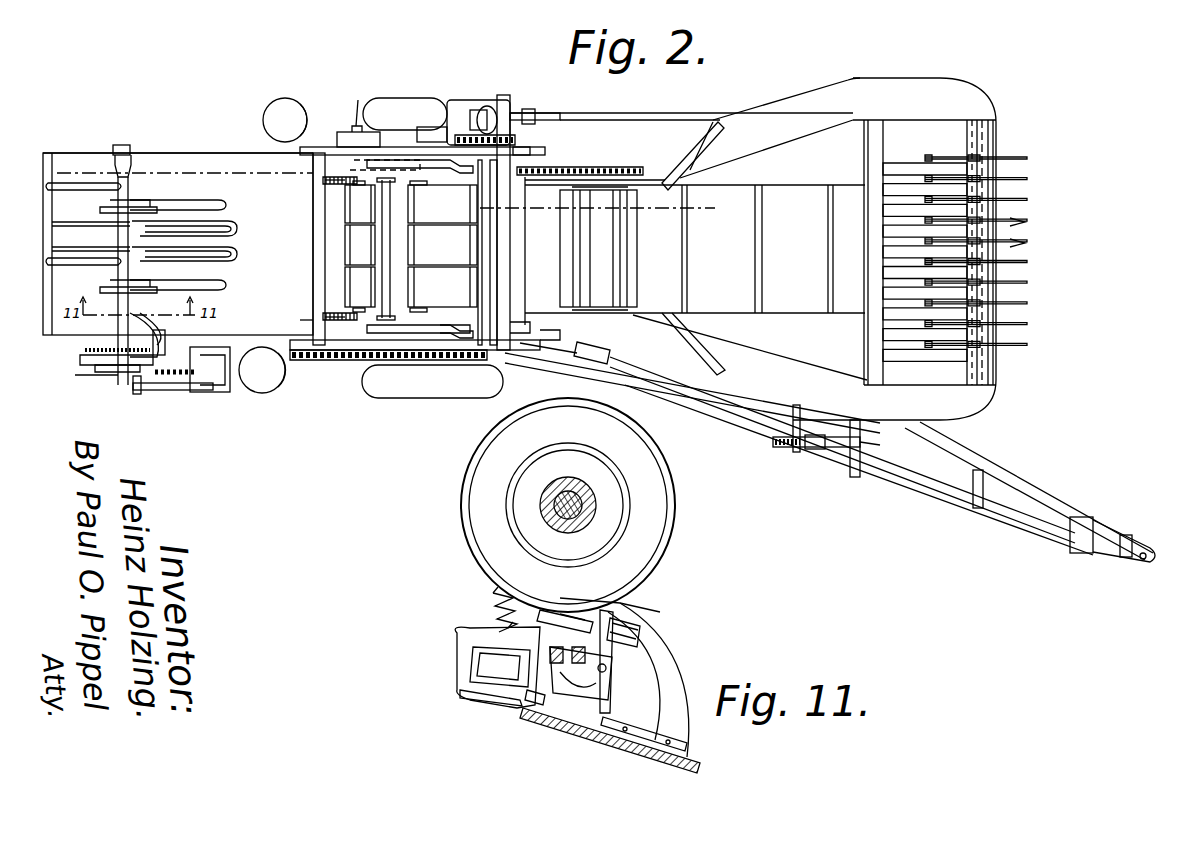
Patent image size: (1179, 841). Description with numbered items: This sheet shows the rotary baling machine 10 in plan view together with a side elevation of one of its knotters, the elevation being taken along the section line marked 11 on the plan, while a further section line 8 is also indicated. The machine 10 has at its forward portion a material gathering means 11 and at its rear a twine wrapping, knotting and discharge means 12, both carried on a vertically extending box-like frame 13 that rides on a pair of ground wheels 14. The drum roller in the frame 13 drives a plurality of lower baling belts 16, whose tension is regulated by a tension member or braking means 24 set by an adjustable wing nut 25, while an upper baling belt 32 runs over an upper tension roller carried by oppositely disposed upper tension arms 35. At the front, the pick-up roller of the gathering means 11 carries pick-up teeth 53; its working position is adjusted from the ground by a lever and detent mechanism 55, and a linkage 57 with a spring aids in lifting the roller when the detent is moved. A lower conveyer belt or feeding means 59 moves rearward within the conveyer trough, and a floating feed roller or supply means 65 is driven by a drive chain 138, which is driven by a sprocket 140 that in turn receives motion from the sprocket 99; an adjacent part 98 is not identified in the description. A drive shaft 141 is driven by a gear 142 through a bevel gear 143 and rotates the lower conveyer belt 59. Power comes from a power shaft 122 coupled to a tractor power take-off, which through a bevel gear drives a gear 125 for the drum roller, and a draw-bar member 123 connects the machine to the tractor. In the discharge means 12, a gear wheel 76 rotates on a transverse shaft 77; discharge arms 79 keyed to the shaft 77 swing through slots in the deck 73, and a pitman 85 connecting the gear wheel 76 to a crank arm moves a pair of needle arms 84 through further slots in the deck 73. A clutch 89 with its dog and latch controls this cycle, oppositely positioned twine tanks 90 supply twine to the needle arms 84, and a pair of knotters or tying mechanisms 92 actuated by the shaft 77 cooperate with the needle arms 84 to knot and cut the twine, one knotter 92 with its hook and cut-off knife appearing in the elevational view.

In FIG. 2, the section line 8- 8 is at (73, 140).
In FIG. 2, the rotary baling mechanism 10 is at (511, 372).
In FIG. 2, the material gathering means 11 is at (1003, 378).
In FIG. 2, the twine wrapping, knotting and discharge means 12 is at (112, 385).
In FIG. 2, the box-like frame 13 is at (313, 320).
In FIG. 2, the ground wheels 14 is at (415, 98).
In FIG. 2, the lower baling belts 16 is at (345, 295).
In FIG. 2, the tension member 24 is at (345, 132).
In FIG. 2, the adjustable wing nut 25 is at (358, 126).
In FIG. 2, the upper baling belt 32 is at (477, 295).
In FIG. 2, the upper tension arms 35 is at (405, 160).
In FIG. 2, the pick-up teeth 53 is at (1025, 243).
In FIG. 2, the lever and detent mechanism 55 is at (828, 455).
In FIG. 2, the linkage 57 is at (780, 105).
In FIG. 2, the lower conveyer belt 59 is at (757, 249).
In FIG. 2, the feed roller 65 is at (635, 267).
In FIG. 2, the deck 73 is at (240, 153).
In FIG. 11, the deck 73 is at (572, 725).
In FIG. 2, the gear wheel 76 is at (92, 366).
In FIG. 11, the shaft 77 is at (572, 496).
In FIG. 2, the discharge arms 79 is at (168, 249).
In FIG. 2, the needle arms 84 is at (210, 205).
In FIG. 2, the pitman 85 is at (160, 392).
In FIG. 2, the clutch 89 is at (222, 393).
In FIG. 2, the twine tanks 90 is at (270, 110).
In FIG. 2, the knotters 92 is at (138, 205).
In FIG. 2, the drive shaft 98 is at (560, 103).
In FIG. 2, the sprocket 99 is at (515, 138).
In FIG. 2, the power shaft 122 is at (1005, 518).
In FIG. 2, the draw-bar member 123 is at (1050, 490).
In FIG. 2, the gear 125 is at (450, 325).
In FIG. 2, the drive chain 138 is at (608, 165).
In FIG. 2, the sprocket 140 is at (535, 167).
In FIG. 2, the drive shaft 141 is at (655, 105).
In FIG. 2, the gear 142 is at (473, 100).
In FIG. 2, the bevel gear 143 is at (492, 108).